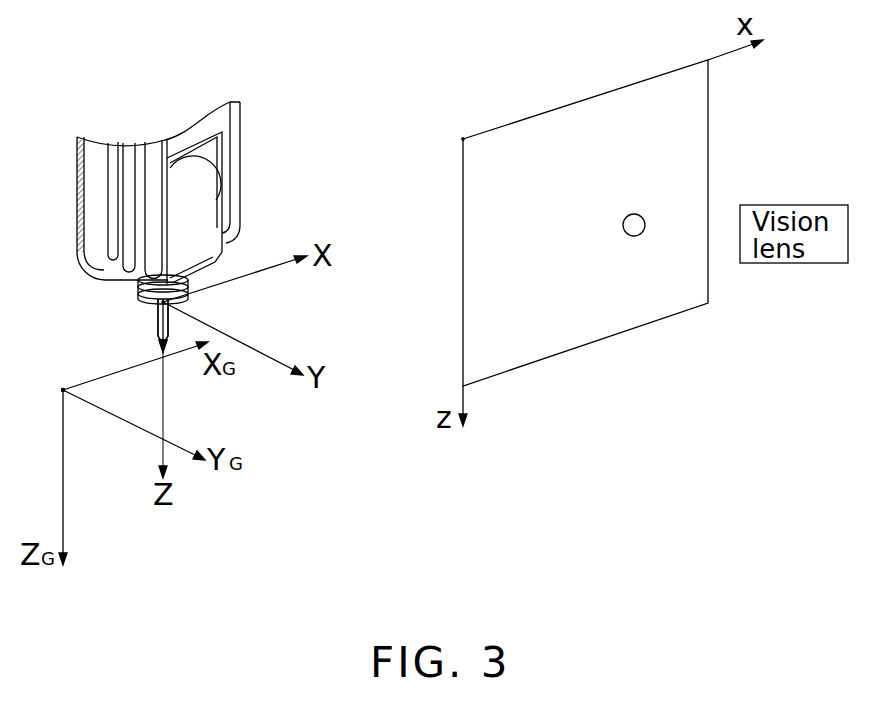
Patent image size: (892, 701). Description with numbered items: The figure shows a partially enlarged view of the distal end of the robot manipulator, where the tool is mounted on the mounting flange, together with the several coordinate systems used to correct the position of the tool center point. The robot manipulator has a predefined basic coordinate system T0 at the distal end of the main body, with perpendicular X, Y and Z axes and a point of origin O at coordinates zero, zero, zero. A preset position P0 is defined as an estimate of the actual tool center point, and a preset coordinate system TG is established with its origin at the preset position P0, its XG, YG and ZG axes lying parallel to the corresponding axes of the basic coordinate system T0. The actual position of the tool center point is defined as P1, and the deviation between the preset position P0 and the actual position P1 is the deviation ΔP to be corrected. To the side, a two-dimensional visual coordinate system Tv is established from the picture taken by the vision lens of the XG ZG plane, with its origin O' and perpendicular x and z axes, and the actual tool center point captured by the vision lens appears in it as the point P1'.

The preset coordinate system TG is at (55, 374).
The preset position P0 is at (45, 402).
The basic coordinate system T0 is at (141, 319).
The point of origin O is at (182, 307).
The actual position P1 is at (146, 344).
The two-dimensional visual coordinate system Tv is at (469, 110).
The origin of the two-dimensional visual coordinate system O' is at (448, 141).
The coordinate value of the actual TCP in the visual coordinate system P1' is at (651, 196).